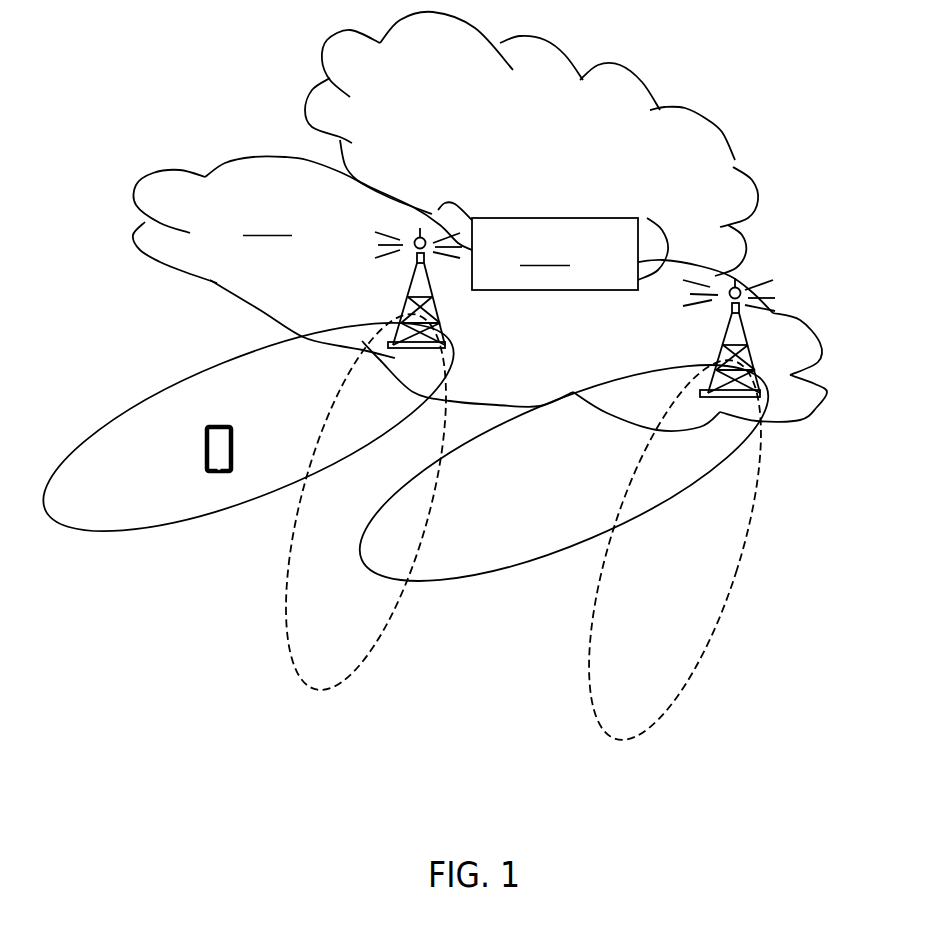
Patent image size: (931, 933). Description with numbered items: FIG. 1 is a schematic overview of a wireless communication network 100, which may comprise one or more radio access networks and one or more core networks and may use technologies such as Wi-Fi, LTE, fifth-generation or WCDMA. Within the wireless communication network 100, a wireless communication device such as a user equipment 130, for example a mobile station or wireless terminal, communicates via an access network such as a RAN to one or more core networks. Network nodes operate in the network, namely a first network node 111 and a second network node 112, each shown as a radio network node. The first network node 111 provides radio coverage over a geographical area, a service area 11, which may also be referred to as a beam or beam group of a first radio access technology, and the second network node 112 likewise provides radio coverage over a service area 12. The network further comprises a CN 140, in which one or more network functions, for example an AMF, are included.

The wireless communication network 100 is at (197, 50).
The core network 140 is at (566, 194).
The first network node 111 is at (417, 300).
The second network node 112 is at (718, 352).
The service area 11 is at (105, 506).
The service area 12 is at (420, 558).
The user equipment 130 is at (233, 430).